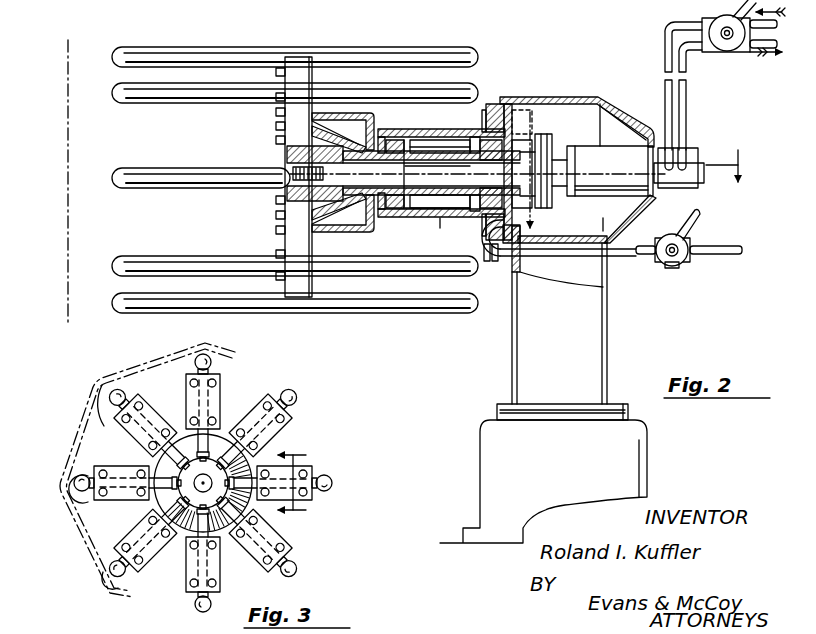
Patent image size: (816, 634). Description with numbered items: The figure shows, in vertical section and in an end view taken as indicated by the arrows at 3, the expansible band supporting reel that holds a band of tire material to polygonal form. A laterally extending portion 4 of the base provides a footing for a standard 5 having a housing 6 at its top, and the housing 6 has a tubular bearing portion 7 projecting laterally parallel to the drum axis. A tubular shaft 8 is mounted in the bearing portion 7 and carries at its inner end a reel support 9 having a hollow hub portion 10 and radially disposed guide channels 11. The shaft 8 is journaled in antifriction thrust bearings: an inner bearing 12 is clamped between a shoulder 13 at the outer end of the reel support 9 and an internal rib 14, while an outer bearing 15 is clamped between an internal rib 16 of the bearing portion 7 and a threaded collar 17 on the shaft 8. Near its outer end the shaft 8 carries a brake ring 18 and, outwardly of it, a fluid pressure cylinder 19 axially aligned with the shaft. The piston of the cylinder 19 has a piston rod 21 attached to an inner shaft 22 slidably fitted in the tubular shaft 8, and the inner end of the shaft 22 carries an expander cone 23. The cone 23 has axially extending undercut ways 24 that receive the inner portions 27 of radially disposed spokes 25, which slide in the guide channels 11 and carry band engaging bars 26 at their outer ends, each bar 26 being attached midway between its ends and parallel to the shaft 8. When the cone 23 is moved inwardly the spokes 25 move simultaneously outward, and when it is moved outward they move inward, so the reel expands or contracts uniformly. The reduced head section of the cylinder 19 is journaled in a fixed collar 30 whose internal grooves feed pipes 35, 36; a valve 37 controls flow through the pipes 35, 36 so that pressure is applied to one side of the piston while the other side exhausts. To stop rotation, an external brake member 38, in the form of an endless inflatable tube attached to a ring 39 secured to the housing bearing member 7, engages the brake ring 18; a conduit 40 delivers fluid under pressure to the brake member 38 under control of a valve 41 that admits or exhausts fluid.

In FIG. 2, the section line 3- 3 is at (84, 40).
In FIG. 2, the laterally extending portion 4 is at (644, 170).
In FIG. 2, the standard 5 is at (610, 342).
In FIG. 3, the standard 5 is at (292, 487).
In FIG. 2, the housing 6 is at (597, 98).
In FIG. 2, the tubular bearing portion 7 is at (426, 133).
In FIG. 2, the tubular shaft 8 is at (442, 219).
In FIG. 2, the reel support 9 is at (280, 153).
In FIG. 3, the reel support 9 is at (226, 390).
In FIG. 2, the hollow hub portion 10 is at (366, 234).
In FIG. 2, the guide channels 11 is at (300, 68).
In FIG. 2, the inner bearing 12 is at (402, 214).
In FIG. 2, the shoulder 13 is at (388, 144).
In FIG. 2, the internal rib 14 is at (448, 137).
In FIG. 2, the outer bearing 15 is at (484, 199).
In FIG. 2, the internal rib 16 is at (412, 175).
In FIG. 2, the threaded collar 17 is at (487, 126).
In FIG. 2, the brake ring 18 is at (516, 142).
In FIG. 2, the fluid pressure cylinder 19 is at (600, 193).
In FIG. 2, the piston rod 21 is at (556, 159).
In FIG. 2, the inner shaft 22 is at (355, 175).
In FIG. 2, the expander cone 23 is at (279, 201).
In FIG. 3, the expander cone 23 is at (152, 505).
In FIG. 2, the undercut ways 24 is at (279, 216).
In FIG. 3, the undercut ways 24 is at (160, 434).
In FIG. 2, the spokes 25 is at (279, 128).
In FIG. 3, the spokes 25 is at (148, 466).
In FIG. 2, the band engaging bars 26 is at (415, 47).
In FIG. 3, the band engaging bars 26 is at (118, 408).
In FIG. 3, the inner portions 27 is at (221, 438).
In FIG. 2, the fixed collar 30 is at (697, 194).
In FIG. 2, the pipe 35 is at (664, 58).
In FIG. 2, the pipe 36 is at (689, 101).
In FIG. 2, the valve 37 is at (729, 51).
In FIG. 2, the brake member 38 is at (508, 140).
In FIG. 2, the ring 39 is at (487, 112).
In FIG. 2, the conduit 40 is at (505, 260).
In FIG. 2, the valve 41 is at (681, 261).